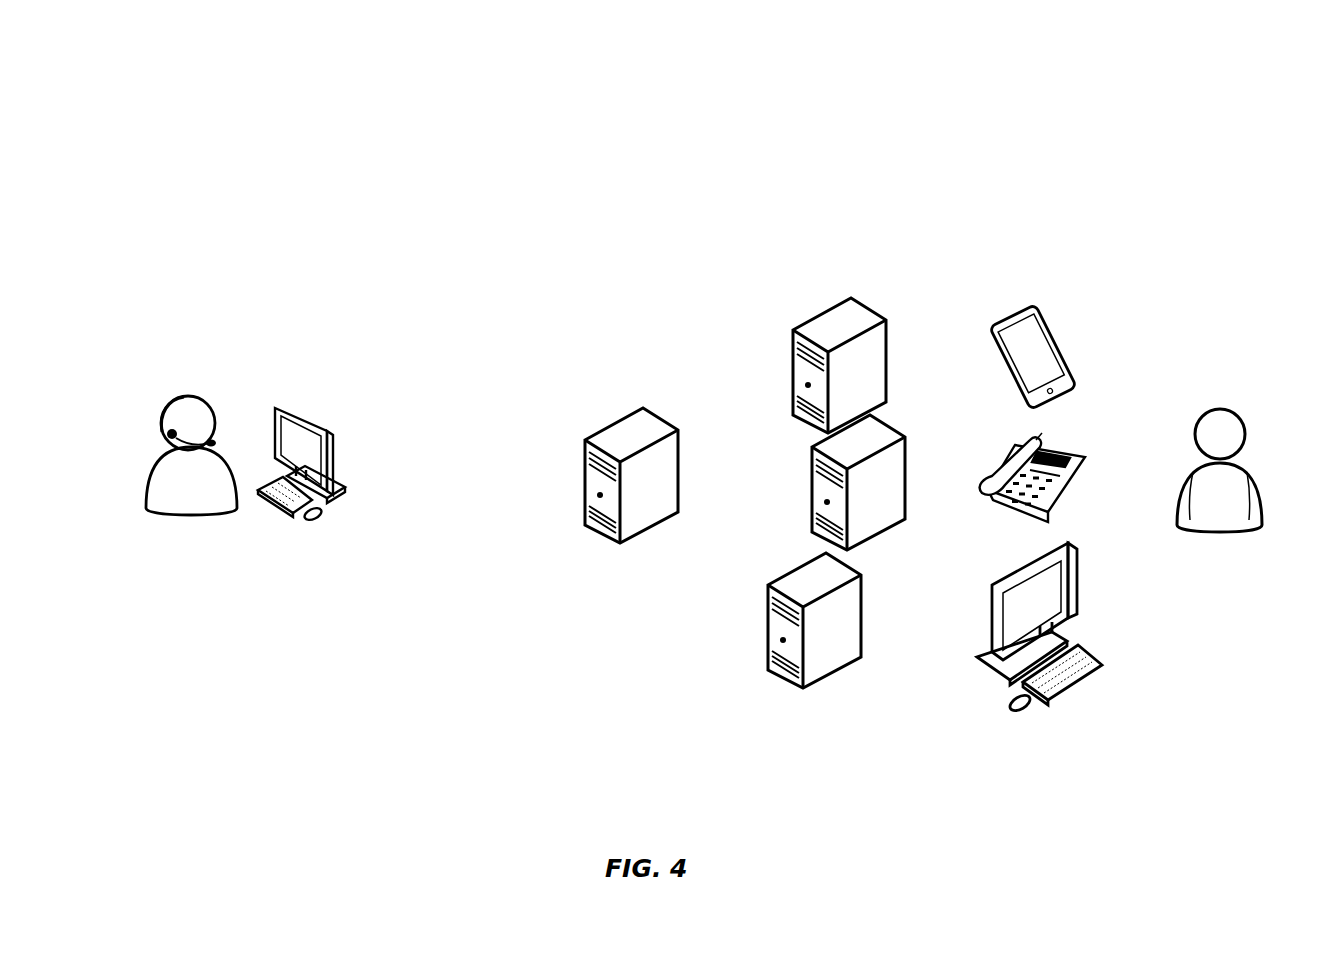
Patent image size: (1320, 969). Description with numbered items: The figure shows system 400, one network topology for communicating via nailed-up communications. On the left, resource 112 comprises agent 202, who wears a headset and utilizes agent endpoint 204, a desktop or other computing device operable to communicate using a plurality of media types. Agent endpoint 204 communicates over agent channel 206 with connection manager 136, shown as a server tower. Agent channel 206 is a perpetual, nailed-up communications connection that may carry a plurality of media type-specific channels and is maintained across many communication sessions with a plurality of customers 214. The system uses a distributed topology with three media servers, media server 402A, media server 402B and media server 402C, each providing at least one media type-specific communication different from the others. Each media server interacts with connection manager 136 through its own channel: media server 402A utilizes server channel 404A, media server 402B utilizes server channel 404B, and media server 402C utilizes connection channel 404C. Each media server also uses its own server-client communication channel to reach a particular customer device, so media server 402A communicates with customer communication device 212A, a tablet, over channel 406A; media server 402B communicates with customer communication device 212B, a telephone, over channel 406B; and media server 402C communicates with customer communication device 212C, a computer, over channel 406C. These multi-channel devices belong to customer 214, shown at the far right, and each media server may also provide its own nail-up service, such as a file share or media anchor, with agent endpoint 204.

The system 400 is at (1177, 132).
The resource 112 is at (328, 318).
The agent 202 is at (207, 397).
The agent endpoint 204 is at (303, 410).
The agent channel 206 is at (372, 459).
The connection manager 136 is at (655, 412).
The server channel 404A is at (773, 387).
The server channel 404B is at (798, 472).
The connection channel 404C is at (685, 488).
The media server 402A is at (880, 388).
The media server 402B is at (897, 506).
The media server 402C is at (855, 635).
The server-client communication channel 406A is at (980, 365).
The server-client communication channel 406B is at (977, 473).
The server-client communication channel 406C is at (973, 618).
The customer communication device 212A is at (1060, 330).
The customer communication device 212B is at (1087, 457).
The customer communication device 212C is at (1082, 582).
The customer 214 is at (1241, 424).